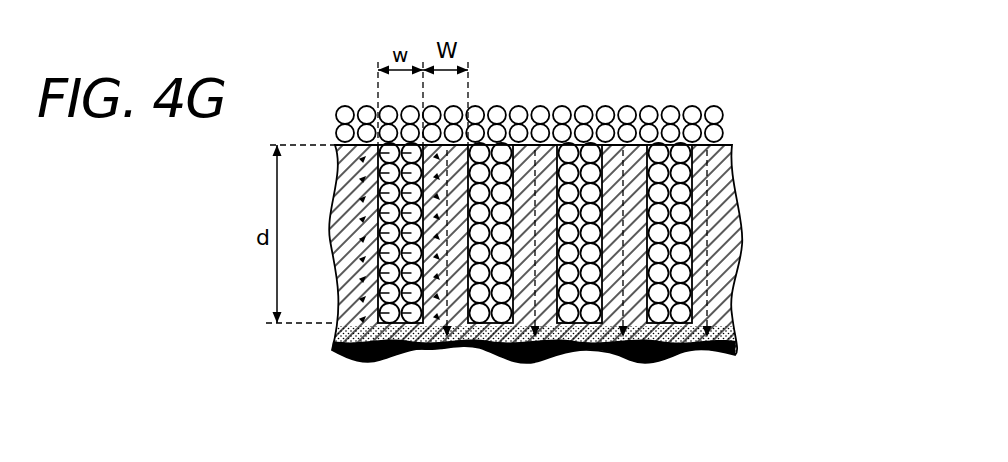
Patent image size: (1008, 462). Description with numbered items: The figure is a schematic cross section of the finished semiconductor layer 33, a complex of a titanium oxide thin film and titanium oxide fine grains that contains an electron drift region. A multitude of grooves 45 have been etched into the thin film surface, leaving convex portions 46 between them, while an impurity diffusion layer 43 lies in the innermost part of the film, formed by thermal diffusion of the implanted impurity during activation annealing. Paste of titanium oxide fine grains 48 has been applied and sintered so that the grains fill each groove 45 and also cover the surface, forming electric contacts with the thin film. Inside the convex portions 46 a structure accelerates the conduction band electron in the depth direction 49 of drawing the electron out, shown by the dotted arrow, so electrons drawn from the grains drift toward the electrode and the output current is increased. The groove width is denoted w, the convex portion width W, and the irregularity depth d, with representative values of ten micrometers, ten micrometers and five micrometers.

The convex portion 46 is at (628, 145).
The TiO2 fine grain 48 is at (722, 132).
The semiconductor layer 33 is at (588, 255).
The impurity diffusion layer 43 is at (748, 148).
The direction of drawing the electron out 49 is at (543, 358).
The groove 45 is at (663, 358).